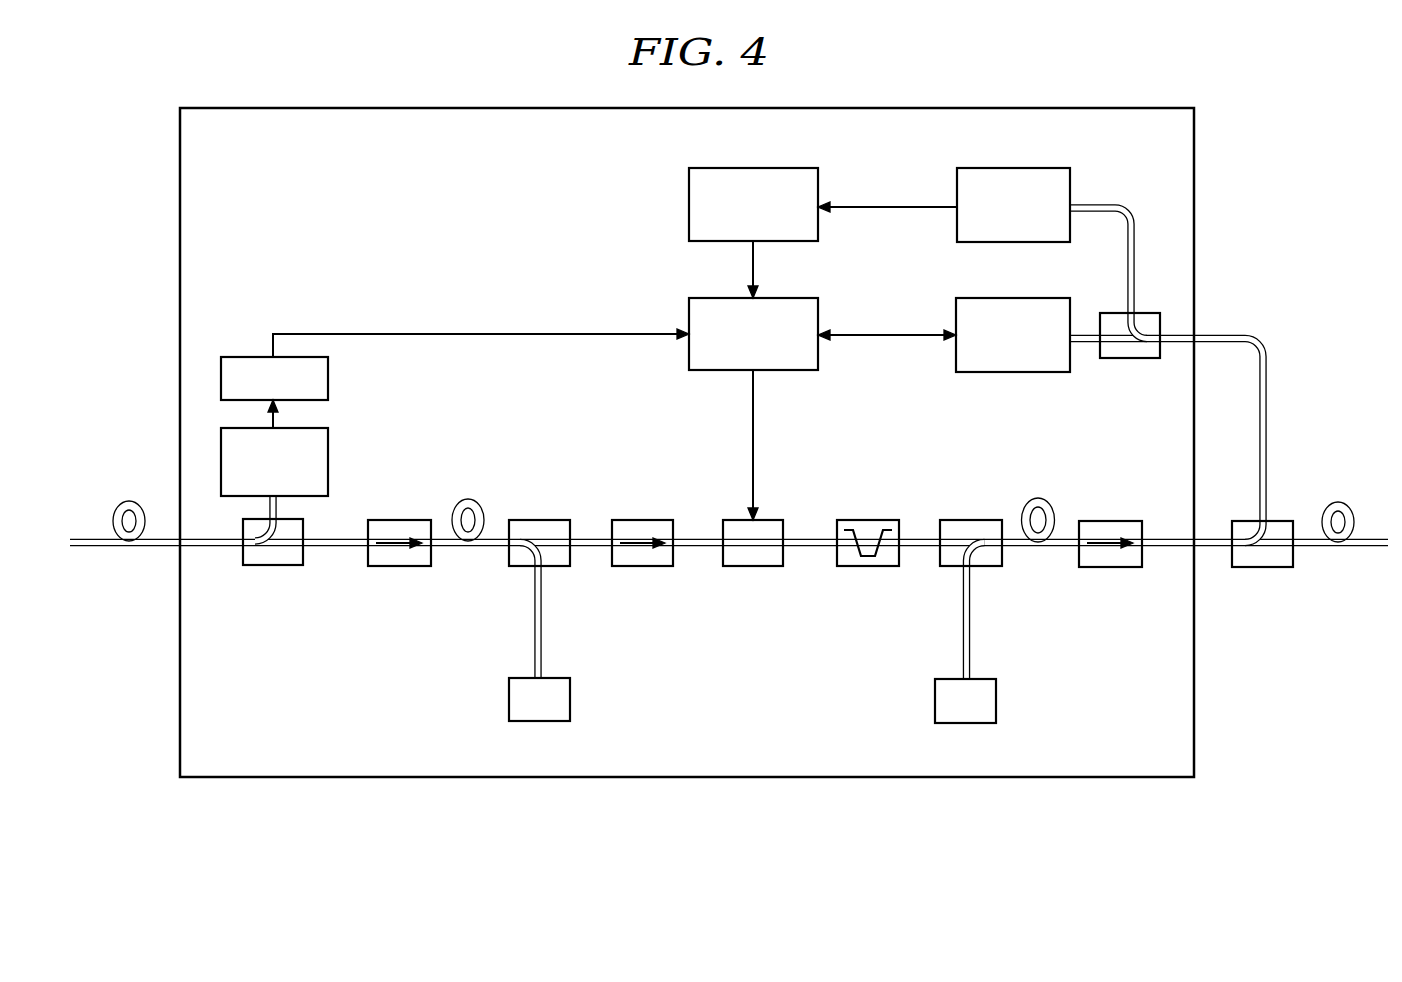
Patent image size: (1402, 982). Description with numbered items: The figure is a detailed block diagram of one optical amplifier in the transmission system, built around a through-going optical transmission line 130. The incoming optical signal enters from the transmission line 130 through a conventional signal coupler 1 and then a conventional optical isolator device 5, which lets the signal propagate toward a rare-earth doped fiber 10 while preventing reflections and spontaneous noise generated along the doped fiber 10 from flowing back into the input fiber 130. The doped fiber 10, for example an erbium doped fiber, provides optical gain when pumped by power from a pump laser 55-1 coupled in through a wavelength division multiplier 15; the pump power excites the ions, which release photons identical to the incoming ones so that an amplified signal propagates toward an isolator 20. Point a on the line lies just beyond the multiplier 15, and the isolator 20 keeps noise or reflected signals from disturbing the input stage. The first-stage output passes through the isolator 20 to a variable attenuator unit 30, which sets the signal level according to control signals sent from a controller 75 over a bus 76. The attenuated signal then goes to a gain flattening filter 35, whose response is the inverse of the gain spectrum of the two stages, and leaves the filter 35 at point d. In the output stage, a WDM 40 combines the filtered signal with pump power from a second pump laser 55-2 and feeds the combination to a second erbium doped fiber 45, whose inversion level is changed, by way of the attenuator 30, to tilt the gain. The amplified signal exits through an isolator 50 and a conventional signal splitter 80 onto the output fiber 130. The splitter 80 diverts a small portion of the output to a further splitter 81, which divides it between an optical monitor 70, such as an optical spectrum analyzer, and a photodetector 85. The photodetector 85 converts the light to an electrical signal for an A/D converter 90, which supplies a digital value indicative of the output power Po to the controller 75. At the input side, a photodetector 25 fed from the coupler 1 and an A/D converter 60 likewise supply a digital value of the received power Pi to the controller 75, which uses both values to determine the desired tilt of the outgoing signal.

The signal coupler 1 is at (273, 566).
The optical isolator device 5 is at (396, 518).
The rare-earth doped fiber 10 is at (470, 499).
The wavelength division multiplier (WDM) 15 is at (540, 518).
The isolator 20 is at (643, 518).
The photodetector 25 is at (328, 450).
The variable attenuator unit (VAU) 30 is at (753, 566).
The gain flattening filter 35 is at (863, 518).
The WDM 40 is at (970, 518).
The rare-earth doped fiber 45 is at (1040, 498).
The isolator 50 is at (1107, 519).
The pump laser 55-1 is at (509, 697).
The pump laser 55-2 is at (935, 697).
The A/D converter 60 is at (328, 372).
The optical monitor 70 is at (956, 362).
The controller 75 is at (689, 300).
The bus 76 is at (757, 428).
The signal splitter 80 is at (1267, 567).
The splitter 81 is at (1130, 358).
The photodetector 85 is at (956, 230).
The analog/digital (A/D) converter 90 is at (689, 200).
The optical transmission line 130 is at (157, 548).
The point a (after first pump coupler) a is at (585, 548).
The point d (after gain flattening filter) d is at (863, 566).